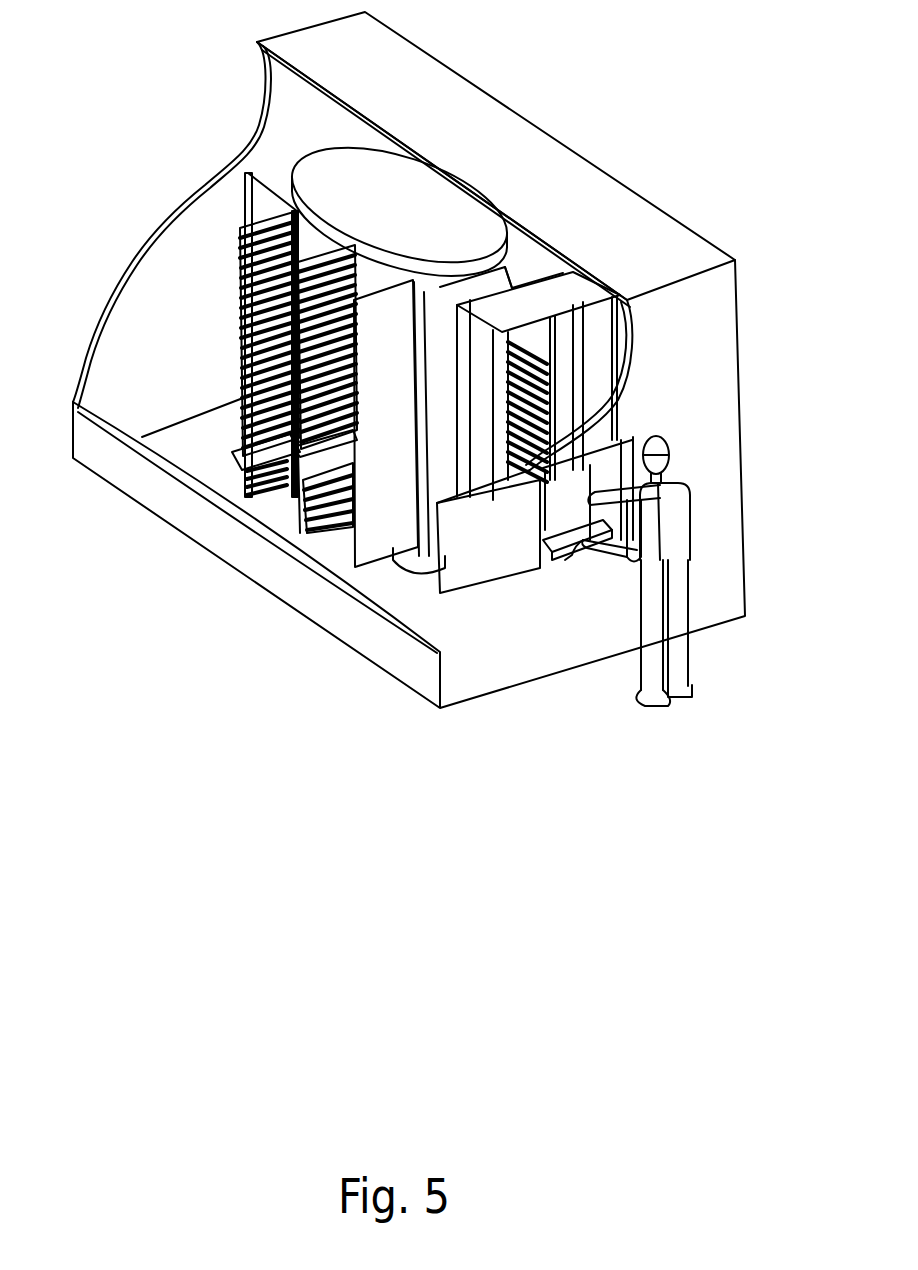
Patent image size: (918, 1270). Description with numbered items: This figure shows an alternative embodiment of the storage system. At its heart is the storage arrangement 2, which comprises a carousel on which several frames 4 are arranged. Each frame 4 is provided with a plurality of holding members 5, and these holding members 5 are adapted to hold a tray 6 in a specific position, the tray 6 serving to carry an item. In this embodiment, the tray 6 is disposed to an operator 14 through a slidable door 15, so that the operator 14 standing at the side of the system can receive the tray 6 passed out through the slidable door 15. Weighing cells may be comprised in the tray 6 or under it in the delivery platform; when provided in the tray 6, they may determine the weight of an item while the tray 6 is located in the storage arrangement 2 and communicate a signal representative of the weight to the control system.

The storage arrangement 2 is at (407, 217).
The frame 4 is at (258, 335).
The holding member 5 is at (327, 530).
The tray 6 is at (267, 470).
The operator 14 is at (678, 670).
The slidable door 15 is at (497, 563).